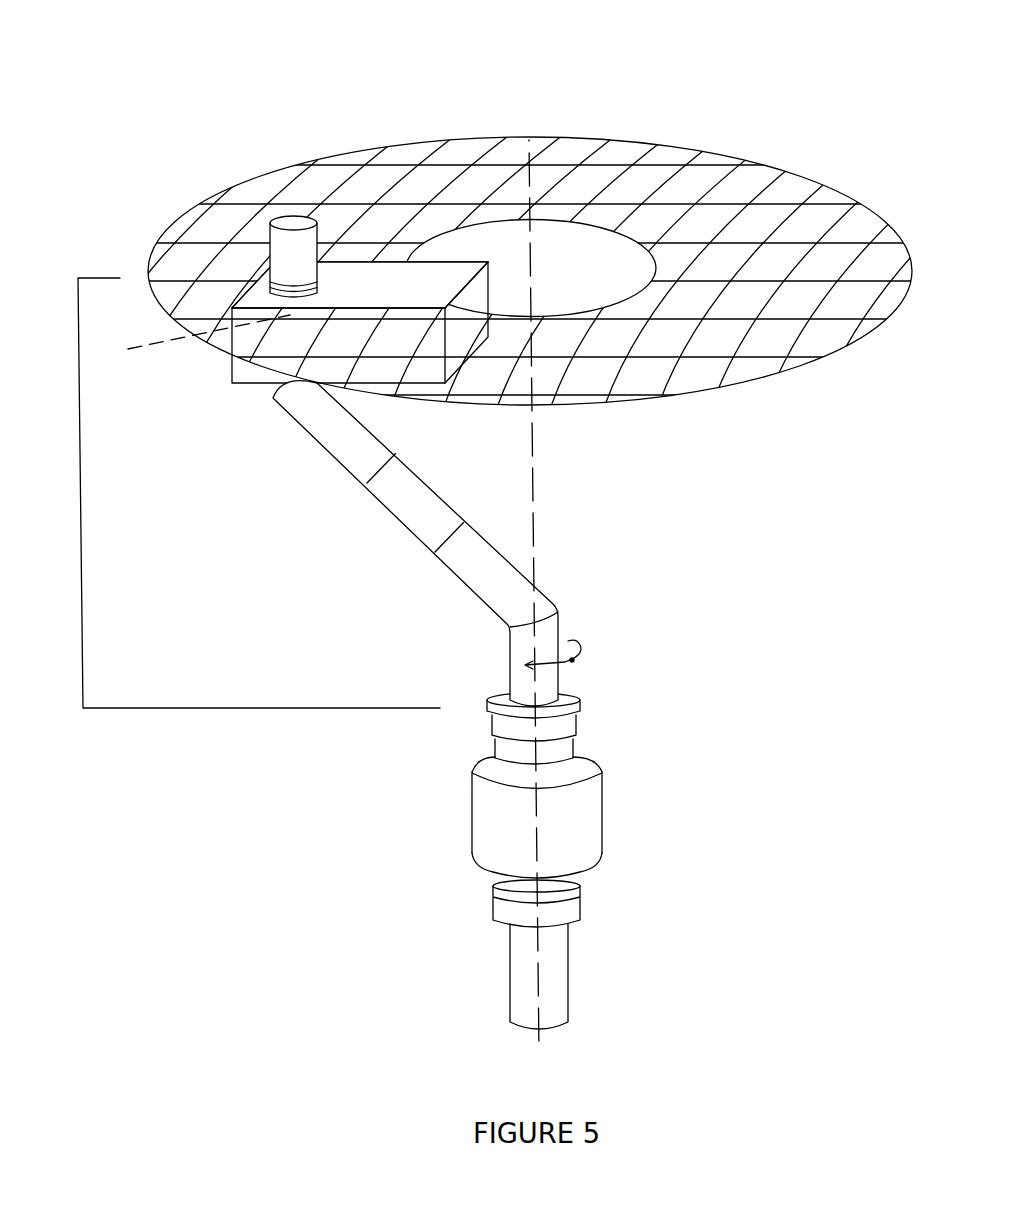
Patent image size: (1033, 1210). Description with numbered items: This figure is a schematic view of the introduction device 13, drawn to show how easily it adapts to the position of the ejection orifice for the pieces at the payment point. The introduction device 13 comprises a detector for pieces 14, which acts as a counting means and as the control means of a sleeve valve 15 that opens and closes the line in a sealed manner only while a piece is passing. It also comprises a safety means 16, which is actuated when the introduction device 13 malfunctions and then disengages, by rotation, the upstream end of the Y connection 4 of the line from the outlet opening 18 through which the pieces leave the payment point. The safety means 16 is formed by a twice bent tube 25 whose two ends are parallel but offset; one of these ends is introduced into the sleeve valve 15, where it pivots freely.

The Y connection 4 is at (562, 966).
The introduction device 13 is at (230, 493).
The detector for pieces 14 is at (190, 340).
The sleeve valve 15 is at (589, 770).
The safety means 16 is at (247, 373).
The outlet opening 18 is at (287, 226).
The twice bent tube 25 is at (463, 527).